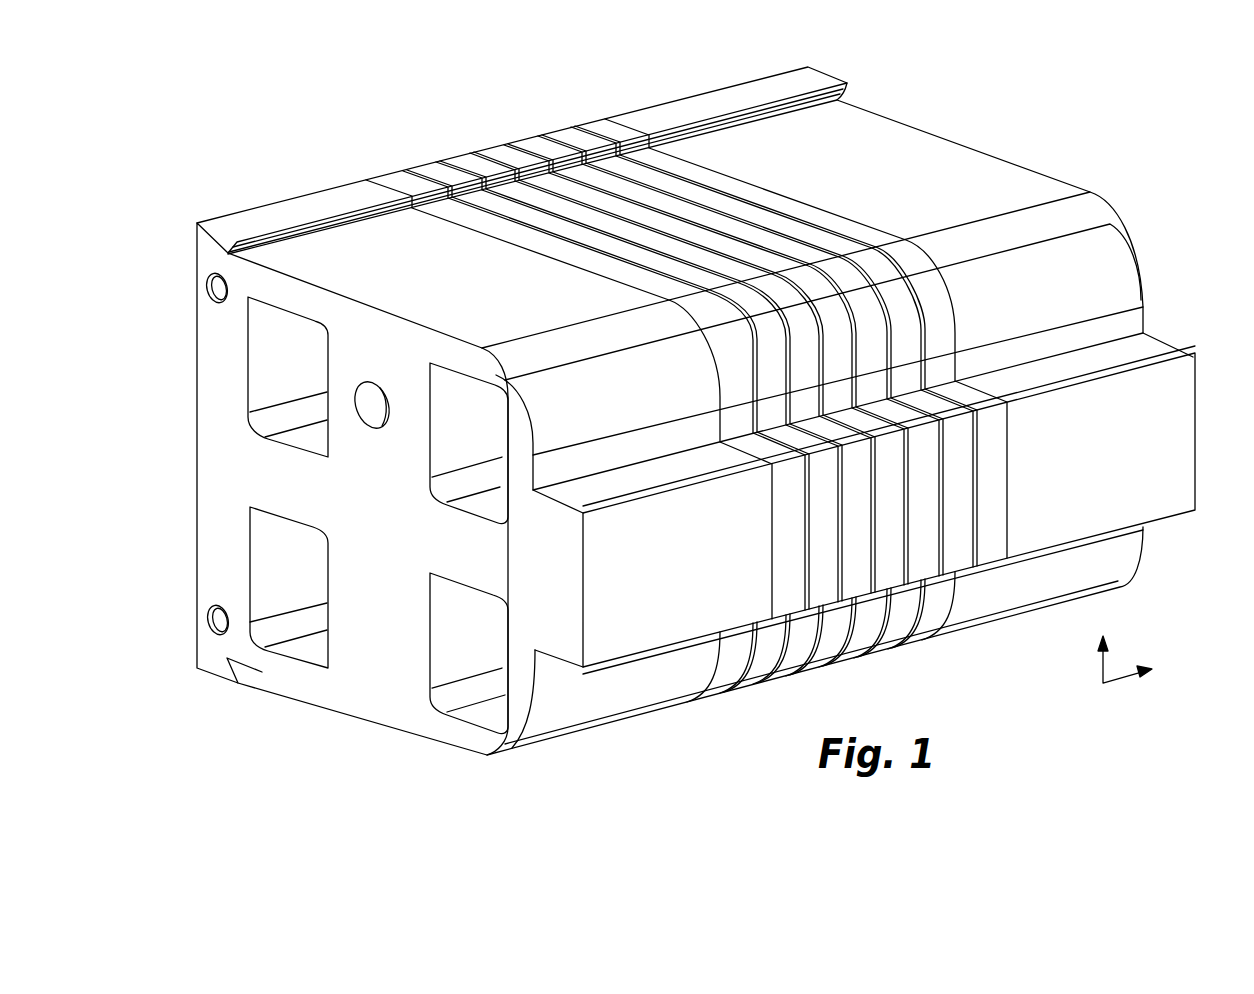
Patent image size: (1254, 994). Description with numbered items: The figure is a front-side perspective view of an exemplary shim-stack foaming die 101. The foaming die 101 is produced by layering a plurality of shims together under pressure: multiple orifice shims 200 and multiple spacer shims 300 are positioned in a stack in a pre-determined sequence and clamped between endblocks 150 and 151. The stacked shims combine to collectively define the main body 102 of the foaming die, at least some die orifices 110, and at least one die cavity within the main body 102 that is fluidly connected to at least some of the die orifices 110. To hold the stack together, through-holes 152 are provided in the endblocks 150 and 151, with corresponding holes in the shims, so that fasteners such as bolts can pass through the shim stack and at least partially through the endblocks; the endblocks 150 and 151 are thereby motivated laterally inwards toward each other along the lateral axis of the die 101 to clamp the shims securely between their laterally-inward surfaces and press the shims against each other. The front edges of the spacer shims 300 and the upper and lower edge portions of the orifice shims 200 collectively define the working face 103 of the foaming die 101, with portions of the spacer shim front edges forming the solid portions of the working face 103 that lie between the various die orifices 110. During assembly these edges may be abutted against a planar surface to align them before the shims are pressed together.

The foaming die 101 is at (291, 101).
The main body 102 is at (560, 180).
The working face 103 is at (995, 482).
The die orifices 110 is at (837, 519).
The endblock 150 is at (920, 145).
The endblock 151 is at (290, 253).
The through-holes 152 is at (440, 663).
The orifice shims 200 is at (802, 593).
The spacer shims 300 is at (815, 568).